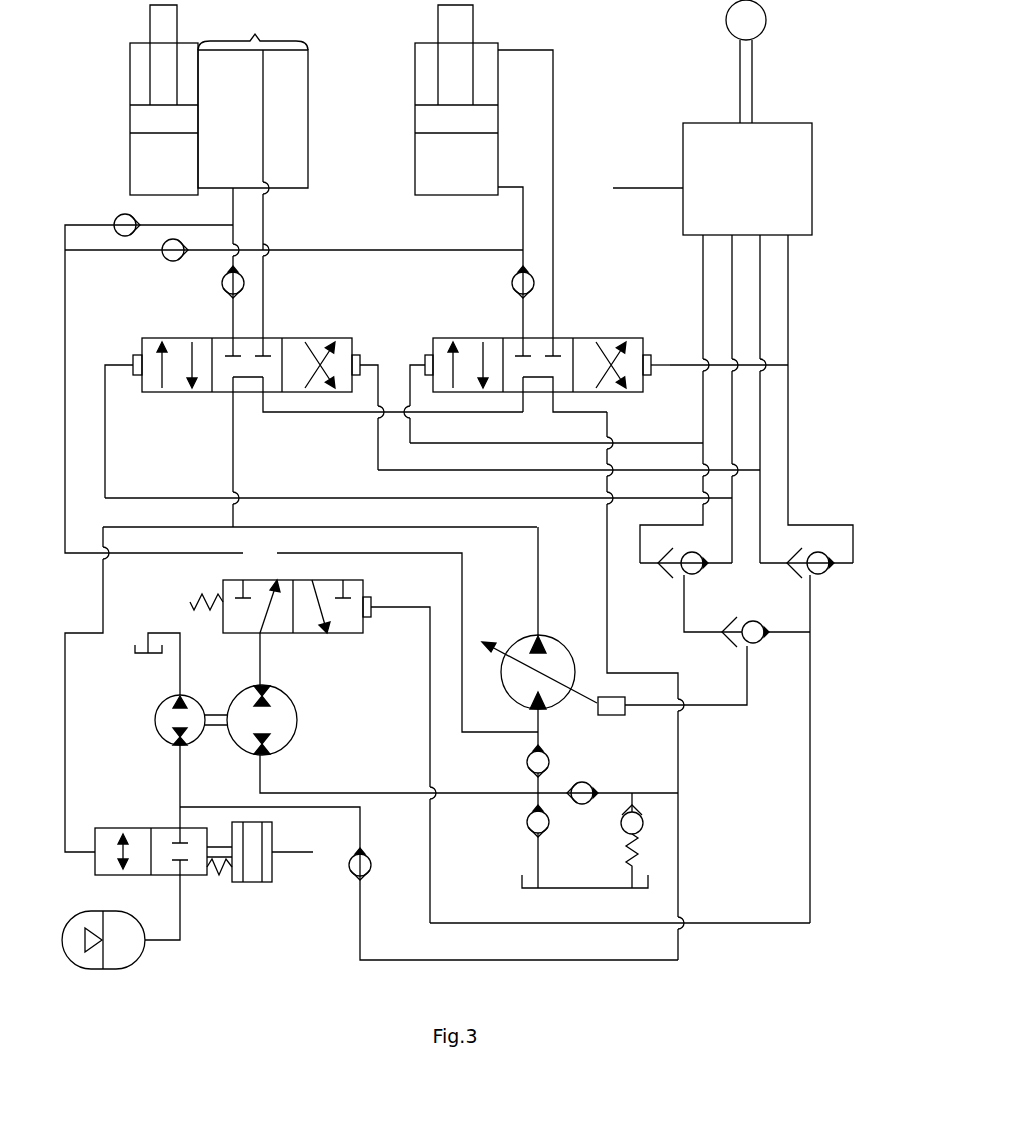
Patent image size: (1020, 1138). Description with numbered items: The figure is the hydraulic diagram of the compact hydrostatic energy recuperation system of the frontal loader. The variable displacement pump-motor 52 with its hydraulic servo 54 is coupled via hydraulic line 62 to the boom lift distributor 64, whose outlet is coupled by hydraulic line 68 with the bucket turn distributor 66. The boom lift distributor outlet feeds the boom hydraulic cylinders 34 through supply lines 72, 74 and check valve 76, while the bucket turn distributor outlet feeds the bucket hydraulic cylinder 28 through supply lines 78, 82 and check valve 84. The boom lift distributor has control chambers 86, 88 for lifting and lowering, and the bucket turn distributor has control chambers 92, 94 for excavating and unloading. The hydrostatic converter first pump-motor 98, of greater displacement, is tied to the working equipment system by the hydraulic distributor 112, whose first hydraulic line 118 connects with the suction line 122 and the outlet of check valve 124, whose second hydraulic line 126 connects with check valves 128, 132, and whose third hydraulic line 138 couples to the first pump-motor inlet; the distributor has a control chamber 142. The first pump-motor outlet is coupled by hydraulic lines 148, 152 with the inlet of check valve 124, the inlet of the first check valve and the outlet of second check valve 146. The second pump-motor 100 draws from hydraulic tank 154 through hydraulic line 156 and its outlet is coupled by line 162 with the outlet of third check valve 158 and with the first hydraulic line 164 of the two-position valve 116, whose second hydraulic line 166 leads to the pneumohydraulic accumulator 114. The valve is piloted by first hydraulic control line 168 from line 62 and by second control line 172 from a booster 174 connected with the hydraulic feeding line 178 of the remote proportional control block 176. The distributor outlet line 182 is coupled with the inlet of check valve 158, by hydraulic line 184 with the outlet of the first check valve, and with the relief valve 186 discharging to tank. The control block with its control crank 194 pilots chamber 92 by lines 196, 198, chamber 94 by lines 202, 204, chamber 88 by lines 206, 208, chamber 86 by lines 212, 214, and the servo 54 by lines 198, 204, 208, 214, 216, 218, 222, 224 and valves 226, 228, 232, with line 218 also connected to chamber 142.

The hydraulic cylinder 28 is at (492, 43).
The hydraulic cylinders 34 is at (255, 40).
The variable displacement pump-motor 52 is at (560, 640).
The hydraulic servo 54 is at (615, 715).
The hydraulic line 62 is at (233, 455).
The distributor 64 is at (288, 338).
The distributor 66 is at (573, 338).
The hydraulic line 68 is at (310, 412).
The supply line 72 is at (233, 322).
The supply line 74 is at (224, 188).
The check valve 76 is at (223, 283).
The supply line 78 is at (523, 320).
The supply line 82 is at (523, 220).
The check valve 84 is at (513, 283).
The control chamber 86 is at (133, 360).
The control chamber 88 is at (358, 352).
The control chamber 92 is at (427, 352).
The control chamber 94 is at (650, 352).
The first pump-motor 98 is at (297, 717).
The second pump-motor 100 is at (157, 710).
The hydraulic distributor 112 is at (345, 633).
The pneumohydraulic accumulator 114 is at (72, 913).
The two-position valve 116 is at (140, 828).
The first hydraulic line 118 is at (462, 600).
The suction line 122 is at (545, 733).
The check valve 124 is at (527, 763).
The second hydraulic line 126 is at (178, 553).
The check valve 128 is at (168, 258).
The check valve 132 is at (115, 217).
The third hydraulic line 138 is at (262, 660).
The control chamber 142 is at (375, 598).
The second check valve 146 is at (527, 822).
The hydraulic line 148 is at (385, 793).
The hydraulic line 152 is at (527, 805).
The hydraulic tank 154 is at (522, 878).
The hydraulic line 156 is at (180, 680).
The third check valve 158 is at (375, 876).
The line 162 is at (362, 840).
The first hydraulic line 164 is at (180, 763).
The second hydraulic line 166 is at (182, 942).
The first hydraulic control line 168 is at (65, 740).
The second control line 172 is at (300, 855).
The booster 174 is at (255, 882).
The remote proportional control block 176 is at (690, 123).
The hydraulic feeding line 178 is at (650, 187).
The outlet line 182 is at (680, 838).
The hydraulic line 184 is at (605, 793).
The relief valve 186 is at (625, 840).
The control crank 194 is at (727, 22).
The line 196 is at (640, 443).
The line 198 is at (703, 282).
The line 202 is at (680, 365).
The line 204 is at (790, 432).
The line 206 is at (378, 452).
The line 208 is at (780, 565).
The line 212 is at (180, 498).
The line 214 is at (712, 565).
The line 216 is at (684, 632).
The line 218 is at (720, 923).
The line 222 is at (780, 632).
The line 224 is at (748, 708).
The valve 226 is at (660, 575).
The valve 228 is at (825, 575).
The valve 232 is at (730, 640).